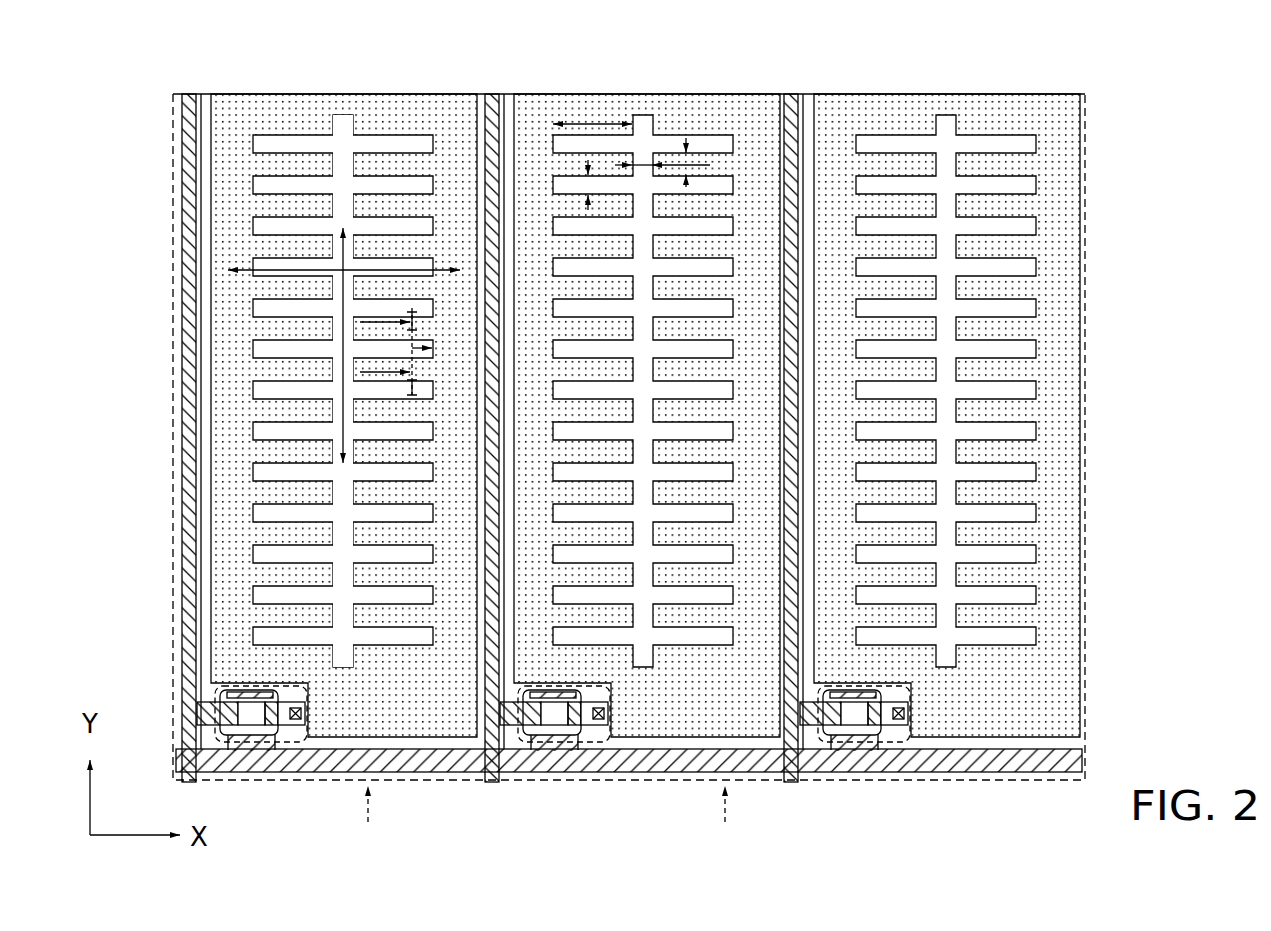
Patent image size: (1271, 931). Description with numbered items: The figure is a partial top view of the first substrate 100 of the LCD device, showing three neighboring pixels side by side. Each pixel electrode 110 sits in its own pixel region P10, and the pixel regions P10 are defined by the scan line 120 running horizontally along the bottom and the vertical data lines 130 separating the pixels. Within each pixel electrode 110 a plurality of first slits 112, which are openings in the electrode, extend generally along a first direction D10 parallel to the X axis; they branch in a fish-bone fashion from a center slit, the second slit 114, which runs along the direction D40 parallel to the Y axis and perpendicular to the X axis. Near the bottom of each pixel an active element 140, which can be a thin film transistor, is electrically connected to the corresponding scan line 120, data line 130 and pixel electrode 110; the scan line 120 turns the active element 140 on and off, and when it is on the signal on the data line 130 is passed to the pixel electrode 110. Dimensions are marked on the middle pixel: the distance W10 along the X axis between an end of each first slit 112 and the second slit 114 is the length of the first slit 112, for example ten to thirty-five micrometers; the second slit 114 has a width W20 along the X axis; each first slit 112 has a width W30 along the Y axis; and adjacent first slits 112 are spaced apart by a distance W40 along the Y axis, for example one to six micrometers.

The first substrate 100 is at (878, 852).
The pixel electrode 110 is at (450, 130).
The first slits 112 is at (279, 186).
The second slit 114 is at (343, 148).
The scan line 120 is at (452, 762).
The data line 130 is at (189, 147).
The active element 140 is at (208, 730).
The first direction D10 is at (232, 274).
The direction of the second slit D40 is at (336, 328).
The distance between an end of each first slit and the second slit W10 is at (597, 121).
The width of the second slit W20 is at (645, 163).
The width of each first slit W30 is at (588, 187).
The spacing between adjacent first slits W40 is at (686, 164).
The pixel region P10 is at (549, 820).